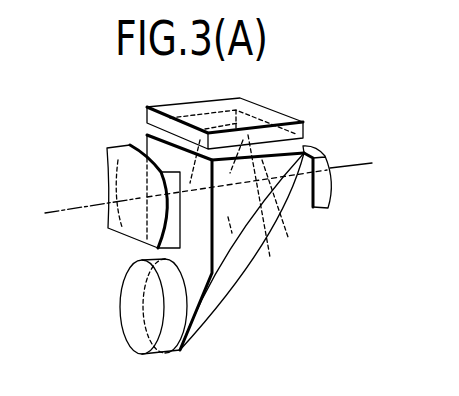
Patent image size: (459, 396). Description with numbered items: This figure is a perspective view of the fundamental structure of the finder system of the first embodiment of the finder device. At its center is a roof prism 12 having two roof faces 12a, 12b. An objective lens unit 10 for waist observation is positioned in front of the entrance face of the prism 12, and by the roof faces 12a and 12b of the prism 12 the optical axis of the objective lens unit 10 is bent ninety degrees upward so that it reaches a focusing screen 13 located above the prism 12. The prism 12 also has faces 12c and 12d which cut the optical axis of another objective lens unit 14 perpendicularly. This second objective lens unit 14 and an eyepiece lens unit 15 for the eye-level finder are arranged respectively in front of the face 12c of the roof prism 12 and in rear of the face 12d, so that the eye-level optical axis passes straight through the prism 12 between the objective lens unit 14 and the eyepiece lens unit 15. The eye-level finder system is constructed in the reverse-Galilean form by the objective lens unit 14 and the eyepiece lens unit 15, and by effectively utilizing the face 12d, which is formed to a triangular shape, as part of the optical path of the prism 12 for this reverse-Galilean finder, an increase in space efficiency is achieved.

The objective lens unit 10 is at (133, 330).
The prism 12 is at (212, 222).
The roof face 12a is at (243, 273).
The roof face 12b is at (233, 288).
The face 12c is at (145, 139).
The face 12d is at (282, 218).
The focusing screen 13 is at (272, 118).
The objective lens unit 14 is at (112, 172).
The eyepiece lens unit 15 is at (329, 210).